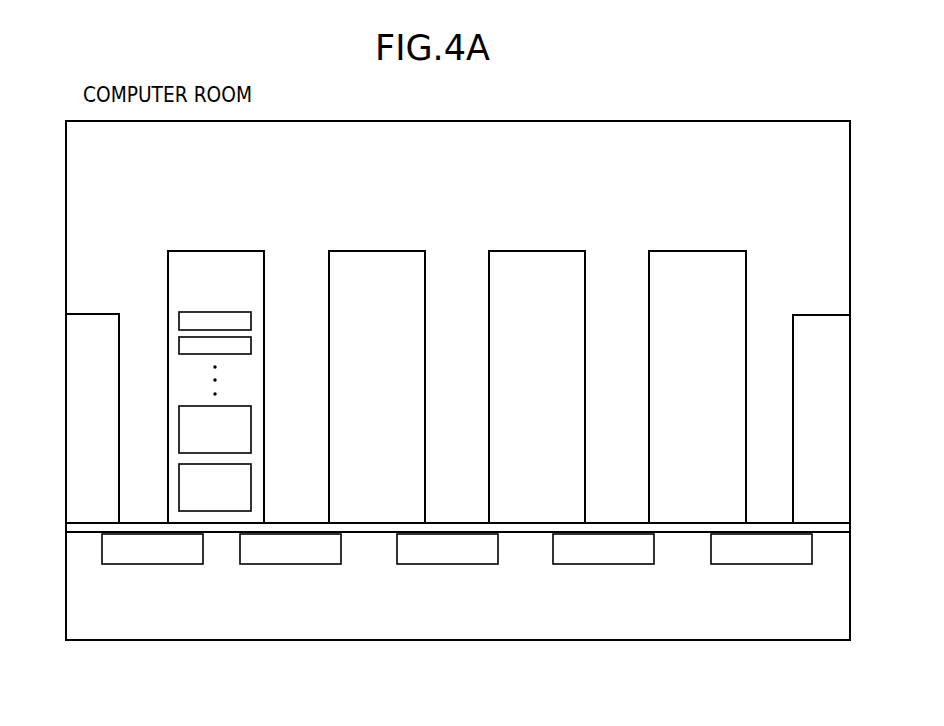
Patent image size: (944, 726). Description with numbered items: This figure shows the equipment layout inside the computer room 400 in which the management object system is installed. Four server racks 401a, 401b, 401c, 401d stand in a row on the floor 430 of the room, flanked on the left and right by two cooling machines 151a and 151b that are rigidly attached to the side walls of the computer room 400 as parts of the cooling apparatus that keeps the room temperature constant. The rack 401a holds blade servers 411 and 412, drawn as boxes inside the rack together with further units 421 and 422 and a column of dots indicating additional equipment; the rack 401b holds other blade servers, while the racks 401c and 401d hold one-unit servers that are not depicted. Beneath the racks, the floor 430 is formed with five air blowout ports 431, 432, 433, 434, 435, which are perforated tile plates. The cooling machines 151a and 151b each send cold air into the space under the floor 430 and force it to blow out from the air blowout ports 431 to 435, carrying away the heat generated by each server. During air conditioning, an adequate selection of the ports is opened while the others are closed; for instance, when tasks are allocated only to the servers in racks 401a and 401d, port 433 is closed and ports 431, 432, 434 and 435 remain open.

The computer room 400 is at (753, 103).
The cooling machine 151a is at (96, 313).
The cooling machine 151b is at (818, 314).
The rack 401a is at (217, 250).
The rack 401b is at (377, 250).
The rack 401c is at (537, 250).
The rack 401d is at (698, 250).
The blade server 411 is at (252, 430).
The blade server 412 is at (252, 490).
The network device 421 is at (252, 322).
The network device 422 is at (252, 345).
The floor 430 is at (456, 522).
The air blowout port 431 is at (152, 566).
The air blowout port 432 is at (291, 566).
The air blowout port 433 is at (448, 566).
The air blowout port 434 is at (604, 566).
The air blowout port 435 is at (762, 566).